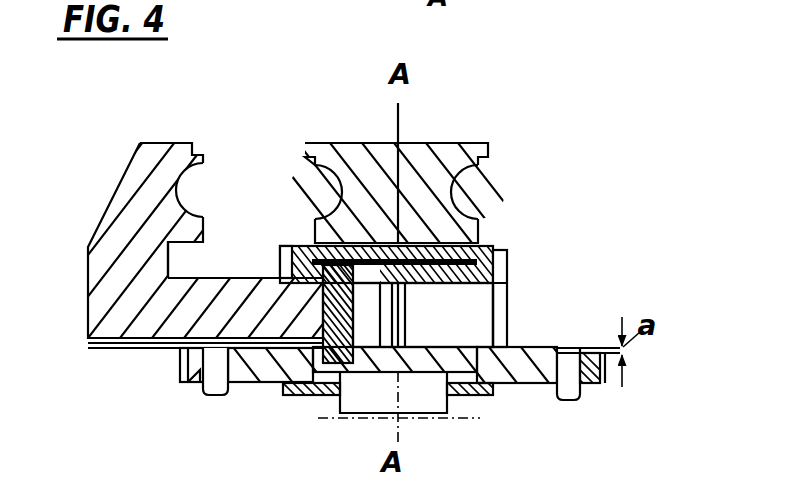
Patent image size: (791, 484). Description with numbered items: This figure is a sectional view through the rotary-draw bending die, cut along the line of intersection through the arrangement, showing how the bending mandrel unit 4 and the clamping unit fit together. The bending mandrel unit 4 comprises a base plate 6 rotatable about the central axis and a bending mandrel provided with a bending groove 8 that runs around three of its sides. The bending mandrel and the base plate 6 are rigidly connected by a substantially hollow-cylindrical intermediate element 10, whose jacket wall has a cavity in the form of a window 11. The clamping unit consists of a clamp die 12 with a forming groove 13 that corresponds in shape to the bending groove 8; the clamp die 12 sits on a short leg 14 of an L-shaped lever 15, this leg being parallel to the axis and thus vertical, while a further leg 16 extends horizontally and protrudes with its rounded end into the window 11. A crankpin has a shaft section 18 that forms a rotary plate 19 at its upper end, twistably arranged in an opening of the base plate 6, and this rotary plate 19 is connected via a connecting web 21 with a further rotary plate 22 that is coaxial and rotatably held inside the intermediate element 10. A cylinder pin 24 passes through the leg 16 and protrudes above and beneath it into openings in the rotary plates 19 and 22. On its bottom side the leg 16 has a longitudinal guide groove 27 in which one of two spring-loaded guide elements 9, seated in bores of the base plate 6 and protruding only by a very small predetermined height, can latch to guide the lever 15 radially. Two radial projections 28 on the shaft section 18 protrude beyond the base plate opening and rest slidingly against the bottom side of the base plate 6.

The bending mandrel unit 4 is at (432, 167).
The base plate 6 is at (533, 373).
The bending groove 8 is at (328, 194).
The guide elements 9 is at (210, 380).
The intermediate element 10 is at (507, 252).
The window 11 is at (466, 318).
The clamp die 12 is at (143, 182).
The forming groove 13 is at (188, 190).
The short leg 14 is at (108, 282).
The L-shaped lever 15 is at (199, 262).
The further leg 16 is at (147, 318).
The shaft section 18 is at (357, 400).
The rotary plate 19 is at (404, 352).
The connecting web 21 is at (478, 303).
The rotary plate 22 is at (478, 240).
The cylinder pin 24 is at (323, 300).
The guide groove 27 is at (95, 348).
The radial projections 28 is at (293, 388).